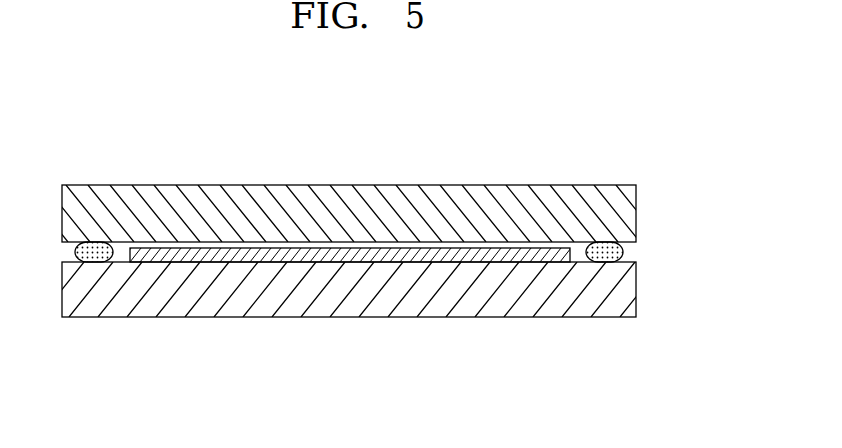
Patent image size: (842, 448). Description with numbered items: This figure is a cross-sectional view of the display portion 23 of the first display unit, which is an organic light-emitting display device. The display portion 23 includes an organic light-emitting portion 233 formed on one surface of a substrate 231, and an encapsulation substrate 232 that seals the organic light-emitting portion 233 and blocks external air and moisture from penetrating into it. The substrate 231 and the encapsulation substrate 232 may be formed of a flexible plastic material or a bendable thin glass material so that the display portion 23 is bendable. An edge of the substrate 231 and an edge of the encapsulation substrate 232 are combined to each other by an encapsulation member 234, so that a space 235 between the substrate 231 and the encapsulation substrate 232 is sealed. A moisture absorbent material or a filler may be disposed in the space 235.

The display portion 23 is at (641, 166).
The substrate 231 is at (630, 290).
The encapsulation substrate 232 is at (630, 216).
The organic light-emitting portion 233 is at (458, 256).
The encapsulation member 234 is at (622, 257).
The space 235 is at (582, 238).